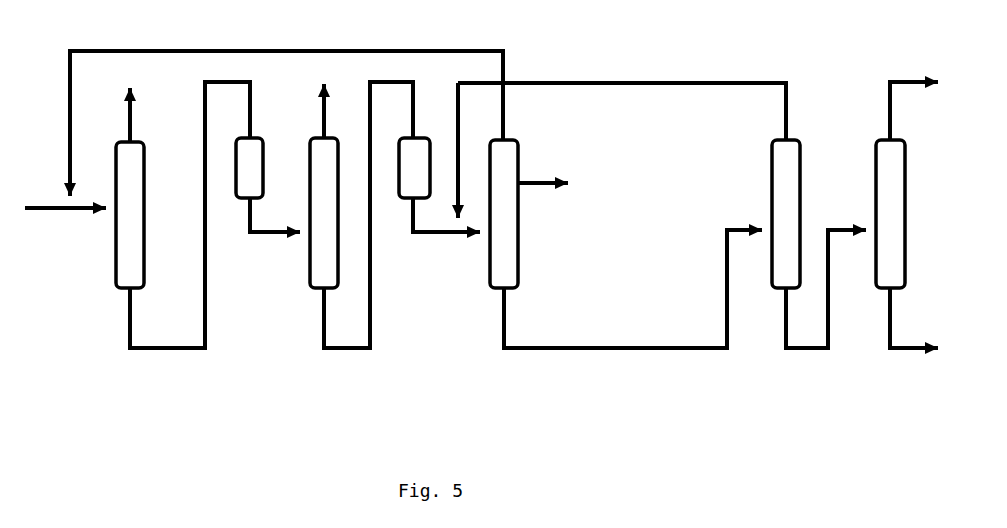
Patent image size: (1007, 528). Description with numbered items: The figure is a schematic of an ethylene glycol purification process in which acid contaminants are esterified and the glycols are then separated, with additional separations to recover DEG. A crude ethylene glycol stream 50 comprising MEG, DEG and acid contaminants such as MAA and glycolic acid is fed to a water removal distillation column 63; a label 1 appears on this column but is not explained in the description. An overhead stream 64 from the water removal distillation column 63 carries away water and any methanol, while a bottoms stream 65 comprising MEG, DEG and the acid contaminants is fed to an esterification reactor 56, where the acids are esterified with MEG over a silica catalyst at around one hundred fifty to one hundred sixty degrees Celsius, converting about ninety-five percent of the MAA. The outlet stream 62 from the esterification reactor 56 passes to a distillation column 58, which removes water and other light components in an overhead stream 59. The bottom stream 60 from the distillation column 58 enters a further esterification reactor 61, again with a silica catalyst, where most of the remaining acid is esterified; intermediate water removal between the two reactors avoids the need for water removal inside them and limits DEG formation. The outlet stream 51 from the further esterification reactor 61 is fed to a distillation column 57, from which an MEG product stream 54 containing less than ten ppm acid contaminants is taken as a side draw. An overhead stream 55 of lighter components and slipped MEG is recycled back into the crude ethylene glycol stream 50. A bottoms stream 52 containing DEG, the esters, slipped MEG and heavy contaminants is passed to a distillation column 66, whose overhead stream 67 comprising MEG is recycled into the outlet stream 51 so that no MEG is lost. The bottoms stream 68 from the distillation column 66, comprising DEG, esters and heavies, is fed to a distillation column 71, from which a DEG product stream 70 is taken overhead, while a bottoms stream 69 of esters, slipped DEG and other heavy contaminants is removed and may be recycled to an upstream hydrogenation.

The first reactor stage 1 is at (134, 228).
The crude ethylene glycol stream 50 is at (47, 214).
The outlet stream from the further esterification reactor 51 is at (447, 238).
The bottoms stream 52 is at (508, 317).
The MEG product stream 54 is at (548, 180).
The overhead stream 55 is at (508, 113).
The esterification reactor 56 is at (249, 172).
The distillation column 57 is at (504, 247).
The distillation column 58 is at (320, 271).
The overhead stream 59 is at (327, 110).
The bottom stream 60 is at (375, 335).
The further esterification reactor 61 is at (414, 166).
The outlet stream 62 is at (268, 237).
The water removal distillation column 63 is at (128, 246).
The overhead stream 64 is at (136, 115).
The bottoms stream 65 is at (165, 352).
The distillation column 66 is at (782, 258).
The overhead stream 67 is at (661, 80).
The bottoms stream 68 is at (810, 352).
The bottoms stream 69 is at (903, 352).
The DEG product stream 70 is at (896, 79).
The distillation column 71 is at (887, 193).